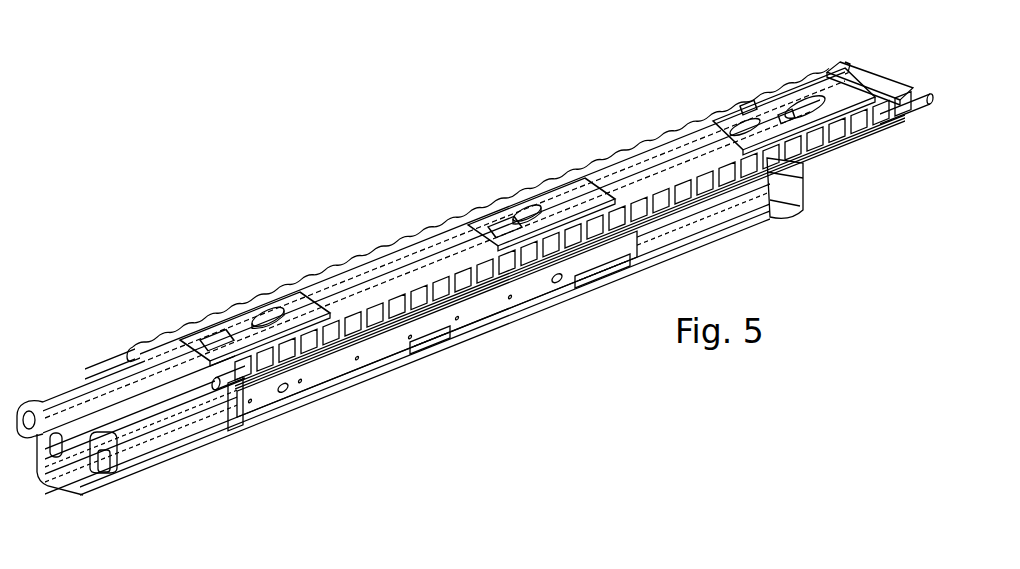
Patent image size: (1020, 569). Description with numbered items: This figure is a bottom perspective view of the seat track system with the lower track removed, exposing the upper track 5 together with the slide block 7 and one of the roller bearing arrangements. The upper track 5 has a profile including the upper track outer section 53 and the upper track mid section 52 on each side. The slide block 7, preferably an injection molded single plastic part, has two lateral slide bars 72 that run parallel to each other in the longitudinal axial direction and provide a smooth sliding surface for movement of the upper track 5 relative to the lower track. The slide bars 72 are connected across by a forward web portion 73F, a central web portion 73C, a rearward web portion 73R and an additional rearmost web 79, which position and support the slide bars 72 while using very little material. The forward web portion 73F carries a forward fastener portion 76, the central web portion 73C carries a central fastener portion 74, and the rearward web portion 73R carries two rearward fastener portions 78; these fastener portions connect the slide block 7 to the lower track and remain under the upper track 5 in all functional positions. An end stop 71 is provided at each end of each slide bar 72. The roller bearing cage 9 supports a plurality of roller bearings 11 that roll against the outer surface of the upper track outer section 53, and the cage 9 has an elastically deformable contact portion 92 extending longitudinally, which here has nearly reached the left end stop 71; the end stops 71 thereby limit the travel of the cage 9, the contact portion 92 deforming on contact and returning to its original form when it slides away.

The upper track 5 is at (128, 482).
The slide block 7 is at (600, 156).
The roller bearing cage 9 is at (478, 314).
The roller bearings 11 is at (250, 425).
The upper track mid section 52 is at (75, 425).
The upper track outer section 53 is at (130, 448).
The end stop 71 is at (245, 386).
The lateral slide bar 72 is at (314, 280).
The forward web portion 73F is at (228, 333).
The central web portion 73C is at (500, 225).
The rearward web portion 73R is at (770, 118).
The central fastener portion 74 is at (517, 212).
The forward fastener portion 76 is at (262, 316).
The rearward fastener portion 78 is at (757, 103).
The additional rearmost web 79 is at (868, 72).
The contact portion 92 is at (315, 362).